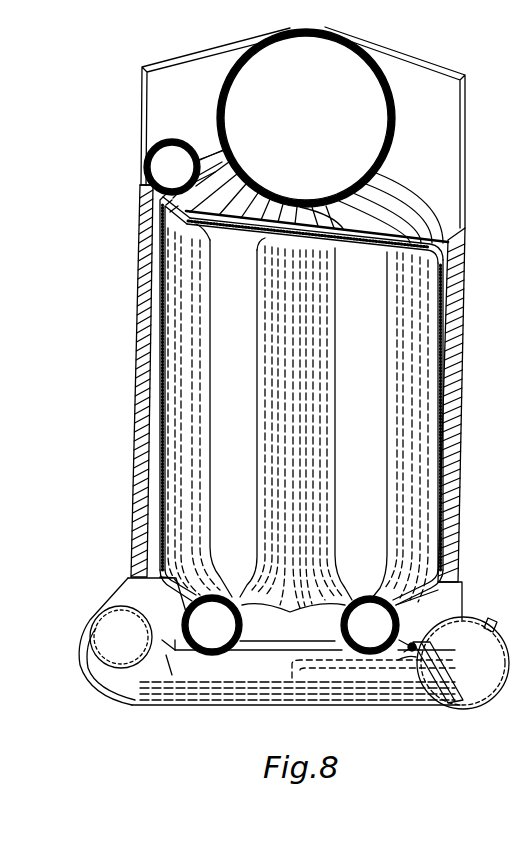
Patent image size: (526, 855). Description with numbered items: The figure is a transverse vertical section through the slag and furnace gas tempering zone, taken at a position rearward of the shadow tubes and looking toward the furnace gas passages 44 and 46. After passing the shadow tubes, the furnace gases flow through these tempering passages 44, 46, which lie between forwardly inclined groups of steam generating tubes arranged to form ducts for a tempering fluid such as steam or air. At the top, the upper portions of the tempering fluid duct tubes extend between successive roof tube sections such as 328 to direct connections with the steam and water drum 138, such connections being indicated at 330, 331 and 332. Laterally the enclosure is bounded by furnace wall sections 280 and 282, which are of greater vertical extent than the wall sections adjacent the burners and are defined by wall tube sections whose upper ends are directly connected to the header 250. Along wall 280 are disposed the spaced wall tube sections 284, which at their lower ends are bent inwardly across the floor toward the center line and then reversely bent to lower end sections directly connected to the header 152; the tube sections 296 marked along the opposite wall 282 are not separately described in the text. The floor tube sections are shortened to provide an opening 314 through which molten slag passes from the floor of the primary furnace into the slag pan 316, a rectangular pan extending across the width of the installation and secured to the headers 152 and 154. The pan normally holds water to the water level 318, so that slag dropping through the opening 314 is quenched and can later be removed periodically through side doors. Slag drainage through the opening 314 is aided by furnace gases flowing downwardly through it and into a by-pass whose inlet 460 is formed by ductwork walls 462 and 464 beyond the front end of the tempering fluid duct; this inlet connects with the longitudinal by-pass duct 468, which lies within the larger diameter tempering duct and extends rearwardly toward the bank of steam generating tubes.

The steam and water drum 138 is at (226, 90).
The header 250 is at (175, 140).
The connection 332 is at (364, 235).
The roof tube section 328 is at (373, 192).
The connection 330 is at (246, 209).
The connection 331 is at (343, 238).
The furnace wall section 280 is at (137, 327).
The wall tube sections 284 is at (159, 360).
The furnace wall section 282 is at (464, 362).
The inner wall 296 is at (445, 414).
The tempering passage 46 is at (241, 401).
The tempering passage 44 is at (365, 401).
The opening 314 is at (291, 615).
The header 152 is at (176, 657).
The header 154 is at (463, 604).
The longitudinal by-pass duct 468 is at (107, 631).
The ductwork wall 462 is at (101, 681).
The by-pass inlet 460 is at (166, 654).
The ductwork wall 464 is at (167, 659).
The slag pan 316 is at (231, 708).
The water level 318 is at (269, 673).